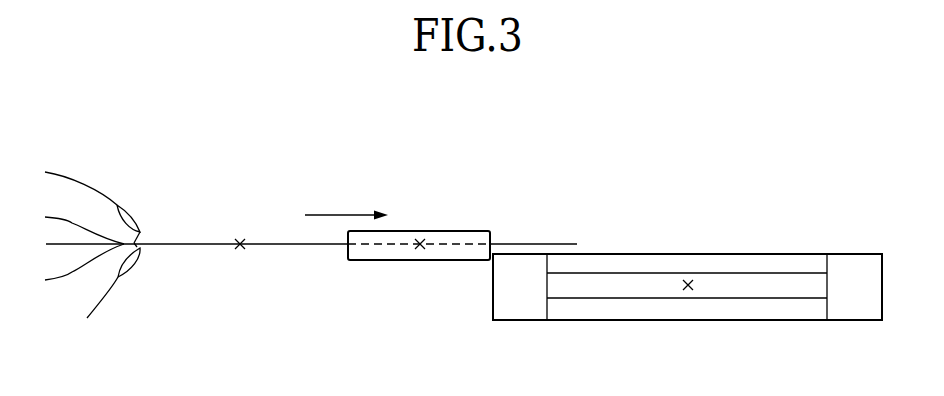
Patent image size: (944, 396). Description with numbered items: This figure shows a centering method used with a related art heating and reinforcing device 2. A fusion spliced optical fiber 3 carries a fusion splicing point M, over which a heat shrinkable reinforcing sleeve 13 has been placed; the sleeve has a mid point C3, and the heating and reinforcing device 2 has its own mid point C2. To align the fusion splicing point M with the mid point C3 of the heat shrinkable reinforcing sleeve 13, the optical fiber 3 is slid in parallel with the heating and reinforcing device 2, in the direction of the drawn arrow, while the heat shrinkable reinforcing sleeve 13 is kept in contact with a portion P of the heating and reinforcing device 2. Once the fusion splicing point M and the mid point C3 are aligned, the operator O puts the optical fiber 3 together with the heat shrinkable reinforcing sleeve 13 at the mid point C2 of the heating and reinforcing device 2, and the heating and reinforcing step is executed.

The operator O is at (93, 183).
The optical fiber 3 is at (180, 243).
The fusion splicing point M is at (240, 243).
The heat shrinkable reinforcing sleeve 13 is at (467, 231).
The mid point of the heat shrinkable reinforcing sleeve C3 is at (422, 237).
The heating and reinforcing device 2 is at (777, 207).
The mid point of the heating and reinforcing device C2 is at (692, 288).
The portion of the heating and reinforcing device P is at (477, 278).